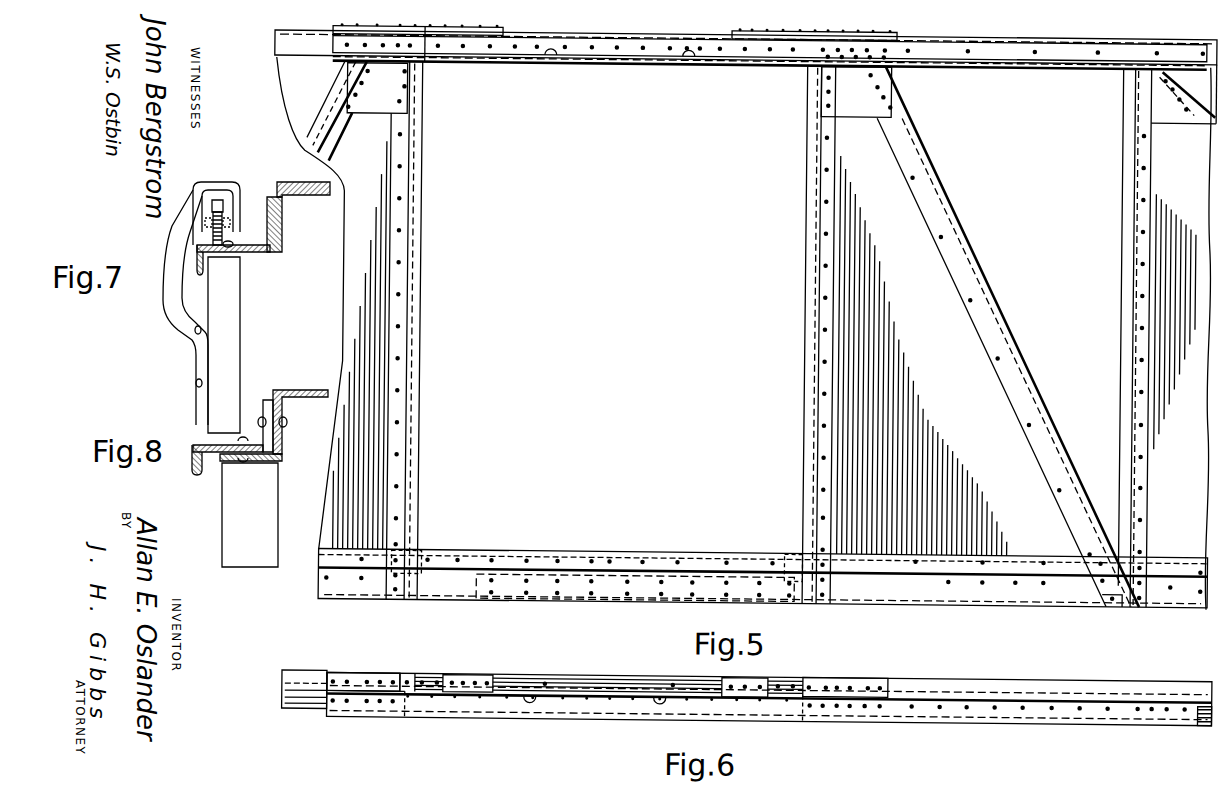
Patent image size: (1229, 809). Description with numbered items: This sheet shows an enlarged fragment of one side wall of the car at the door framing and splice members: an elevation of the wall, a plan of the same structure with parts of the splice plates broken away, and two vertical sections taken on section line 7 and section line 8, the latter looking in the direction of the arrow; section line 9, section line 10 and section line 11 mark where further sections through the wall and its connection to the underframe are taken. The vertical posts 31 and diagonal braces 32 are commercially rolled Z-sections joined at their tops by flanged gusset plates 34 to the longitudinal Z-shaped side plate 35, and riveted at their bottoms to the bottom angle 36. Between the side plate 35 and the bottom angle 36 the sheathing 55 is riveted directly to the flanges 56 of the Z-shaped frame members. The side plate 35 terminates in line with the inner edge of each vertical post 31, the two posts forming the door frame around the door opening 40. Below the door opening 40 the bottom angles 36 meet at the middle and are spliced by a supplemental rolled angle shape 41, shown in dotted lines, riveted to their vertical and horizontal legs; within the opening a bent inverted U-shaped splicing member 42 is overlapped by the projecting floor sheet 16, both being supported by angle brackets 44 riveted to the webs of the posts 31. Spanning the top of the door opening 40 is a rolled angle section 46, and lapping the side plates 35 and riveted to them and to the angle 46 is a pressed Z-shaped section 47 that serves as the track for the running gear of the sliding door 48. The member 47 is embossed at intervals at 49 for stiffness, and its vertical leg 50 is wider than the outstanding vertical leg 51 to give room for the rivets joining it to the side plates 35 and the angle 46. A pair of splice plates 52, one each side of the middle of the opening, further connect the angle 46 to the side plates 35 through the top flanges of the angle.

In FIG. 5, the section line 7- 7 is at (764, 27).
In FIG. 5, the section line 8- 8 is at (935, 29).
In FIG. 5, the section line 9- 9 is at (1186, 412).
In FIG. 8, the section line 9- 9 is at (313, 415).
In FIG. 5, the section line 10- 10 is at (672, 516).
In FIG. 5, the section line 11- 11 is at (986, 613).
In FIG. 5, the floor sheet 16 is at (616, 548).
In FIG. 5, the vertical post 31 is at (426, 212).
In FIG. 6, the vertical post 31 is at (405, 718).
In FIG. 5, the diagonal brace 32 is at (340, 81).
In FIG. 5, the angular gusset plate 34 is at (372, 106).
In FIG. 5, the side plate 35 is at (318, 31).
In FIG. 8, the side plate 35 is at (283, 443).
In FIG. 6, the side plate 35 is at (317, 662).
In FIG. 5, the bottom angle 36 is at (375, 592).
In FIG. 5, the door opening 40 is at (605, 260).
In FIG. 5, the supplemental rolled angle shape 41 is at (755, 583).
In FIG. 5, the supplemental brace and splicing member 42 is at (534, 548).
In FIG. 5, the angle bracket 44 is at (430, 548).
In FIG. 5, the rolled angle section 46 is at (634, 34).
In FIG. 7, the rolled angle section 46 is at (283, 204).
In FIG. 6, the rolled angle section 46 is at (604, 684).
In FIG. 5, the Z-shaped section 47 is at (510, 52).
In FIG. 7, the Z-shaped section 47 is at (262, 253).
In FIG. 8, the Z-shaped section 47 is at (222, 455).
In FIG. 6, the Z-shaped section 47 is at (708, 707).
In FIG. 7, the sliding door 48 is at (240, 300).
In FIG. 5, the embossment 49 is at (551, 53).
In FIG. 7, the embossment 49 is at (246, 208).
In FIG. 6, the embossment 49 is at (530, 701).
In FIG. 7, the vertical leg 50 is at (242, 240).
In FIG. 8, the vertical leg 50 is at (264, 408).
In FIG. 5, the outstanding vertical leg 51 is at (471, 58).
In FIG. 7, the outstanding vertical leg 51 is at (197, 250).
In FIG. 8, the outstanding vertical leg 51 is at (198, 476).
In FIG. 5, the splice plate 52 is at (505, 30).
In FIG. 7, the splice plate 52 is at (320, 181).
In FIG. 6, the splice plate 52 is at (380, 671).
In FIG. 5, the sheathing 55 is at (345, 309).
In FIG. 5, the flange 56 is at (394, 458).